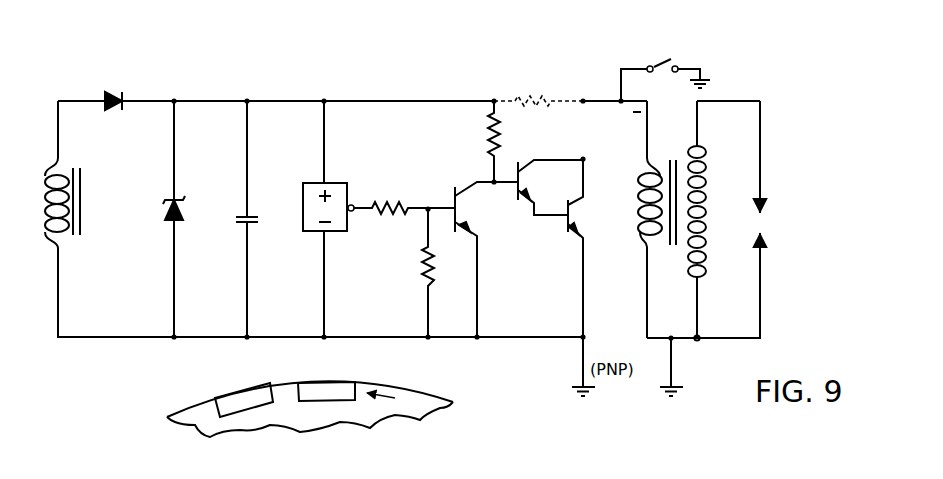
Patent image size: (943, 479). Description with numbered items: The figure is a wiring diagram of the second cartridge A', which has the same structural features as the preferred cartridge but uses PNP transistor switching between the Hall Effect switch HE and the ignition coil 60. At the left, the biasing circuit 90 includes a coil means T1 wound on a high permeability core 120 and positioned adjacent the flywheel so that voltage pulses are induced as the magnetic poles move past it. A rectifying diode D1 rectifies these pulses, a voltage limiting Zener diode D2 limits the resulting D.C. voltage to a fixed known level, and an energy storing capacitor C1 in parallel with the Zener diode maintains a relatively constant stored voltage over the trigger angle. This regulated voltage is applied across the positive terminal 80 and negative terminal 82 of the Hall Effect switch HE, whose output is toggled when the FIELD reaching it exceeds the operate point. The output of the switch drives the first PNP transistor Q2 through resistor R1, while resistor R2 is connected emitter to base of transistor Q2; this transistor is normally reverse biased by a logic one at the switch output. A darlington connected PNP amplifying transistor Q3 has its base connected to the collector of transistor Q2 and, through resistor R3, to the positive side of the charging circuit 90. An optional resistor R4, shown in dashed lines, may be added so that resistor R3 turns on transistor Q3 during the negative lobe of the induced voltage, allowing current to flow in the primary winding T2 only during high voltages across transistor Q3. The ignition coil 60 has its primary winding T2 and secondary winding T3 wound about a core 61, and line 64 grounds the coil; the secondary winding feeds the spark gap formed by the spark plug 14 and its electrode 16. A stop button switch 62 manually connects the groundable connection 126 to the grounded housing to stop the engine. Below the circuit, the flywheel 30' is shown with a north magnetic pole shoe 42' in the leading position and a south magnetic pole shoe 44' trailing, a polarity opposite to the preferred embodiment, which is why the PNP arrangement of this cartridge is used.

The coil means T1 is at (44, 218).
The high permeability core 120 is at (85, 200).
The rectifying diode D1 is at (120, 92).
The biasing circuit 90 is at (228, 86).
The Zener diode D2 is at (184, 210).
The energy storing capacitor C1 is at (250, 222).
The positive terminal 80 is at (324, 182).
The Hall Effect switch HE is at (304, 190).
The negative terminal 82 is at (324, 232).
The magnetic field input FIELD is at (334, 181).
The resistor R1 is at (376, 210).
The resistor R2 is at (428, 268).
The resistor R3 is at (490, 132).
The first PNP transistor Q2 is at (478, 180).
The darlington connected PNP amplifying transistor Q3 is at (579, 157).
The resistor R4 is at (538, 96).
The cartridge A' is at (475, 57).
The groundable connection 126 is at (620, 85).
The stop button switch 62 is at (668, 60).
The primary winding T2 is at (644, 197).
The core 61 is at (670, 158).
The secondary winding T3 is at (700, 240).
The ignition coil 60 is at (714, 97).
The spark gap electrode 16 is at (762, 175).
The spark plug 14 is at (762, 226).
The line 64 is at (674, 368).
The flywheel 30' is at (320, 399).
The north magnetic pole shoe 42' is at (246, 385).
The south magnetic pole shoe 44' is at (346, 377).